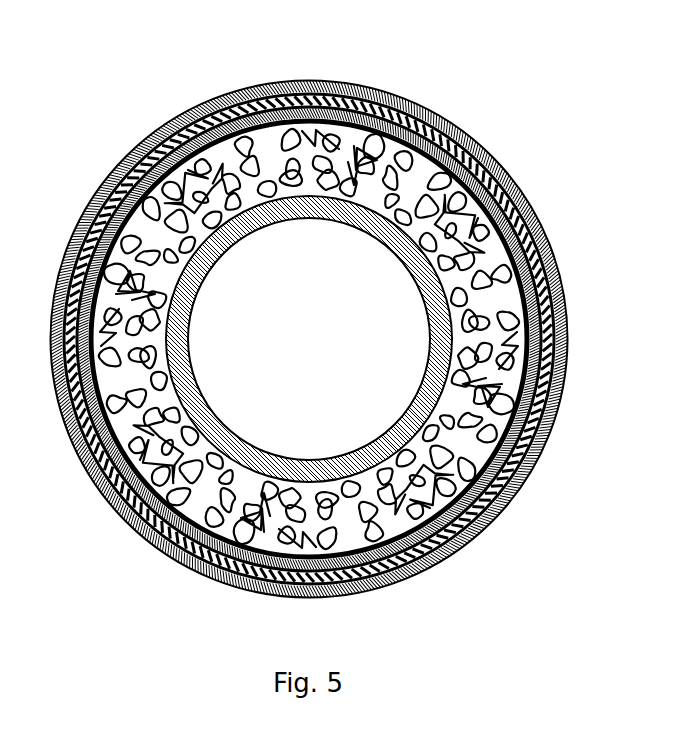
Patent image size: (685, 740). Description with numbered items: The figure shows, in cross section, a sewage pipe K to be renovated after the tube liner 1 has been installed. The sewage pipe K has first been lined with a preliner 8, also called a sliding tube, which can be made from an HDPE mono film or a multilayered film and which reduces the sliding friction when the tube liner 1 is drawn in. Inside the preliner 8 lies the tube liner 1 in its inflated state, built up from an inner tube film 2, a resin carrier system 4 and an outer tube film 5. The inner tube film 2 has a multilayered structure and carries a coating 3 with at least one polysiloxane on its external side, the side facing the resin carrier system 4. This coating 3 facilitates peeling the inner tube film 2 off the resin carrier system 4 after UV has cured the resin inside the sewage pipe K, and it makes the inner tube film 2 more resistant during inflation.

The sewage pipe K is at (475, 140).
The tube liner 1 is at (498, 268).
The inner tube film 2 is at (257, 458).
The coating 3 is at (415, 427).
The resin carrier system 4 is at (212, 187).
The outer tube film 5 is at (162, 135).
The preliner 8 is at (272, 92).